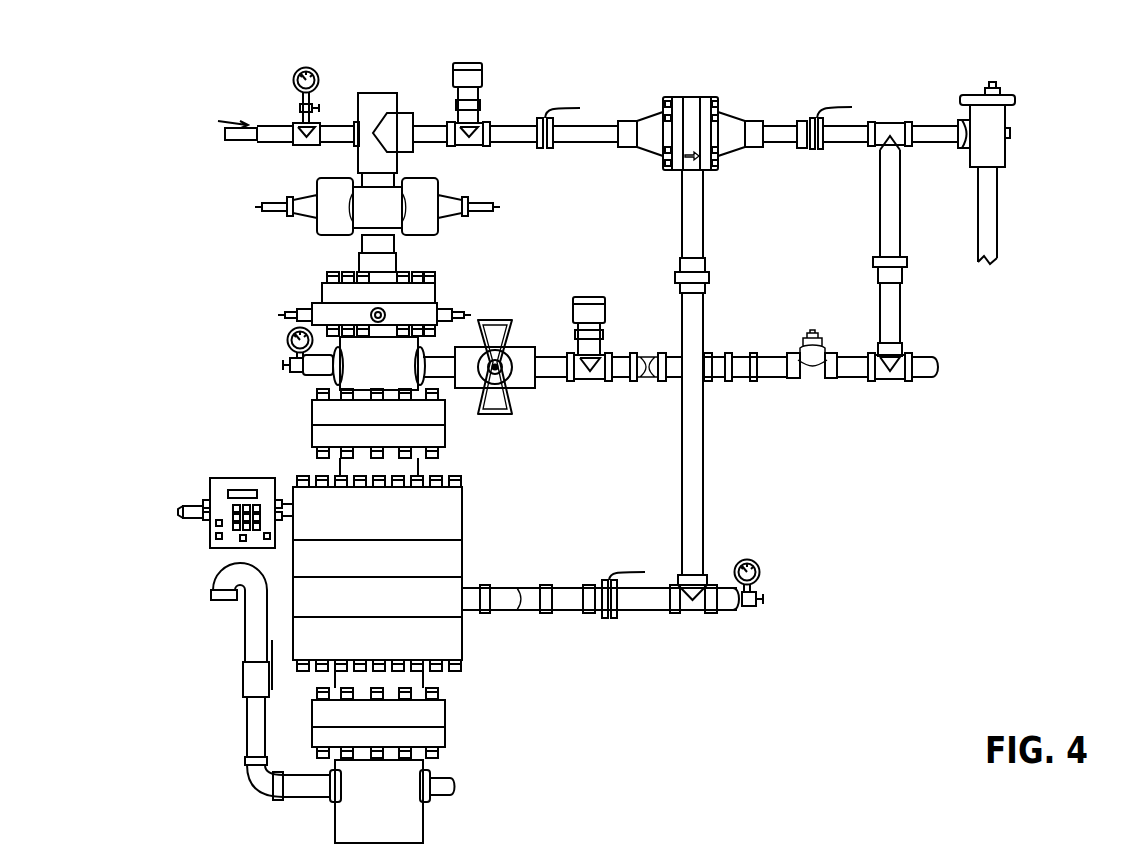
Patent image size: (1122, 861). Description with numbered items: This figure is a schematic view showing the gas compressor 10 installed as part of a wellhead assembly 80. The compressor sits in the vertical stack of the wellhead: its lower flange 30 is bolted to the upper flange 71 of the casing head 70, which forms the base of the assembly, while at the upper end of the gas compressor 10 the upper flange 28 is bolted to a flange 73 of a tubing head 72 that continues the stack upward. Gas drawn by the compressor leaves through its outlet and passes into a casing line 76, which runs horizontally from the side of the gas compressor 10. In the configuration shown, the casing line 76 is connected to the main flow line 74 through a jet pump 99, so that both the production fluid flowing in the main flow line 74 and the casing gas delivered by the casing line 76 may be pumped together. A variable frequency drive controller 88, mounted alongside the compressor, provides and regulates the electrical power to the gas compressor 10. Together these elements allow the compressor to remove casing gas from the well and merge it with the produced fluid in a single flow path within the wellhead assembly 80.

The wellhead assembly 80 is at (124, 117).
The jet pump 99 is at (690, 107).
The main flow line 74 is at (990, 214).
The tubing head 72 is at (358, 368).
The flange 73 is at (318, 413).
The upper flange 28 is at (320, 440).
The variable frequency drive controller 88 is at (215, 488).
The gas compressor 10 is at (320, 598).
The casing line 76 is at (532, 602).
The lower flange 30 is at (318, 710).
The upper flange 71 is at (318, 737).
The casing head 70 is at (348, 818).